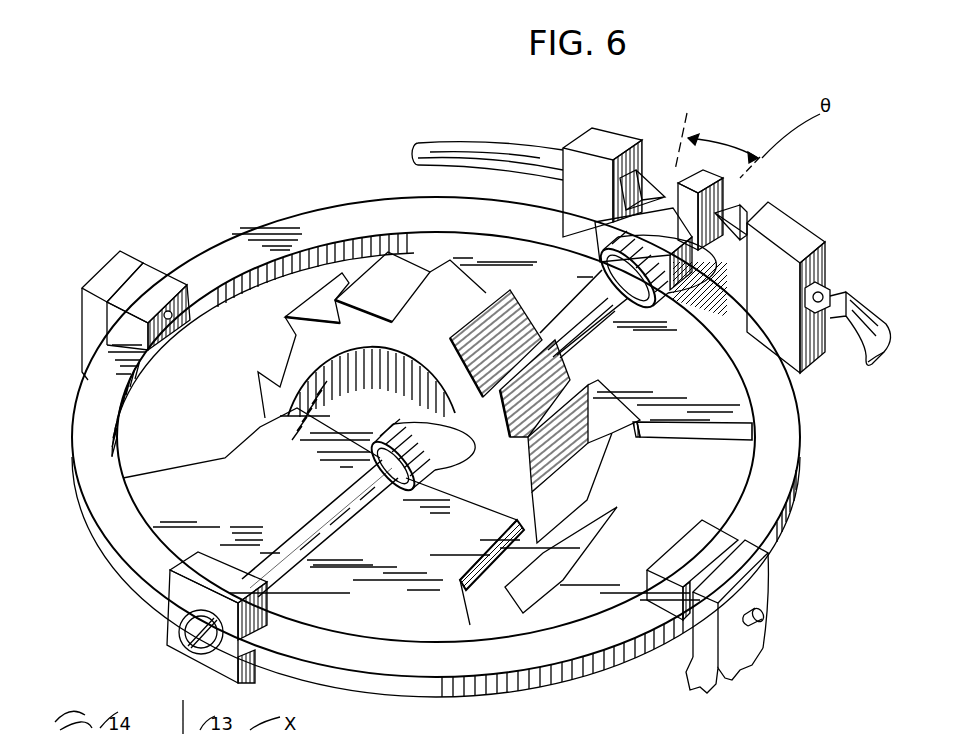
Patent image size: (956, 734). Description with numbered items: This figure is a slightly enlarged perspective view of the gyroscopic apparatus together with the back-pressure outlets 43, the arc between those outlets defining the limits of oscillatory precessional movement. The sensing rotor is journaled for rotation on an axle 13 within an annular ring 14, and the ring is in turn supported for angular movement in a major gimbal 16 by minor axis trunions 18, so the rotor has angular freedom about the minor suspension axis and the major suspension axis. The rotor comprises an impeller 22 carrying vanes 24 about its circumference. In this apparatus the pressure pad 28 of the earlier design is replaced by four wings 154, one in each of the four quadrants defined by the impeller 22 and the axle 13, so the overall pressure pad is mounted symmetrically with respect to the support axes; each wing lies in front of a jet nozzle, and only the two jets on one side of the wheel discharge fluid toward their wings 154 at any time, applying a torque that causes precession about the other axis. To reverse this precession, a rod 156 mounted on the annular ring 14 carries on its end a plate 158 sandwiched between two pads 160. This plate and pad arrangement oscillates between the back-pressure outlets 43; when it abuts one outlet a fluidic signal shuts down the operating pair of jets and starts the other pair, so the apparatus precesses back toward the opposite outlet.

The axle 13 is at (336, 529).
The annular ring 14 is at (399, 667).
The major gimbal 16 is at (95, 338).
The minor axis trunions 18 is at (172, 308).
The impeller 22 is at (476, 471).
The vanes 24 is at (592, 477).
The pressure pad 28 is at (478, 612).
The back-pressure outlets 43 is at (622, 178).
The wings 154 is at (554, 293).
The rod 156 is at (672, 165).
The plate 158 is at (718, 182).
The pads 160 is at (700, 175).